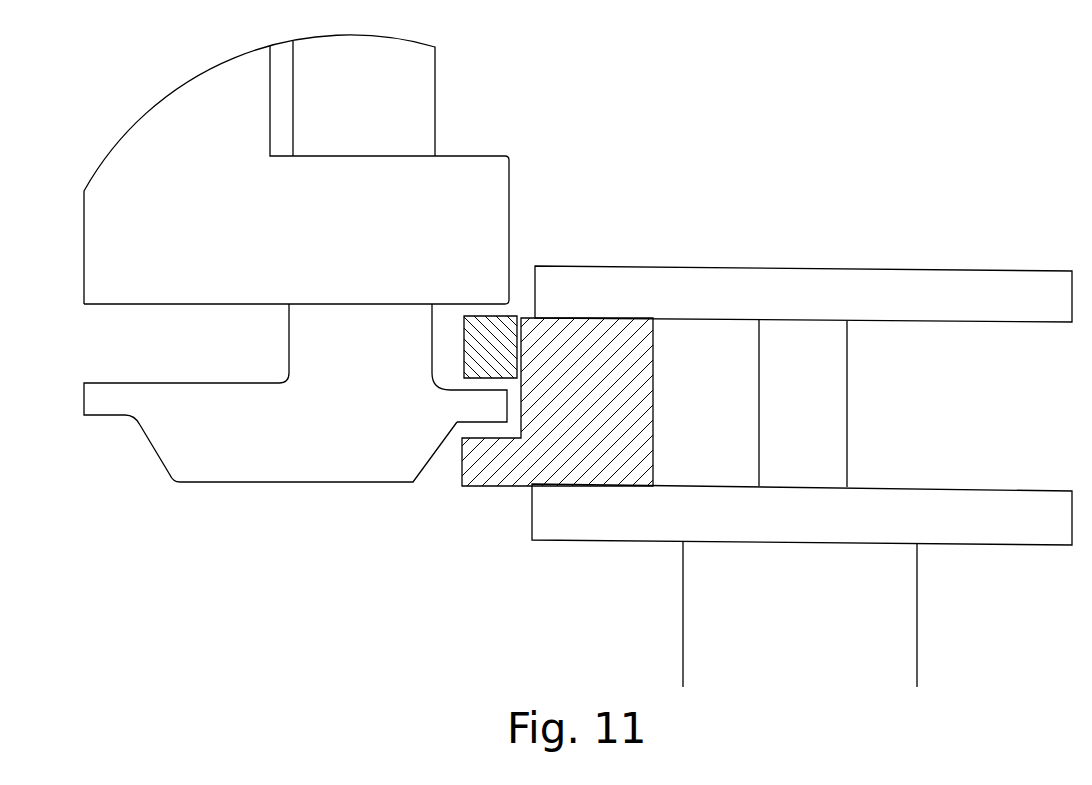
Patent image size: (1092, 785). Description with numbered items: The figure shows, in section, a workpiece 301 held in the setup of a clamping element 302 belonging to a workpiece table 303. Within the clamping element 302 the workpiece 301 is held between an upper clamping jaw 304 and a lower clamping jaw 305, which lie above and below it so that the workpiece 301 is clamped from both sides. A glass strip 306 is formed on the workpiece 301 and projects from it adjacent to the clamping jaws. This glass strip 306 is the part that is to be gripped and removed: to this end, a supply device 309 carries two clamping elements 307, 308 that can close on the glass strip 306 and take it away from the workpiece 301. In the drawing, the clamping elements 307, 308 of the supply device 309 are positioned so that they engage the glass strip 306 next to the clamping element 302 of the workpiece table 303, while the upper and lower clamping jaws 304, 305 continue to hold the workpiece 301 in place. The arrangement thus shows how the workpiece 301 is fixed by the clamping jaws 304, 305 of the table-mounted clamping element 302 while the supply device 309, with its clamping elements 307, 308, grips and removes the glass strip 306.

The workpiece 301 is at (513, 472).
The clamping element 302 is at (777, 231).
The workpiece table 303 is at (957, 654).
The upper clamping jaw 304 is at (591, 276).
The lower clamping jaw 305 is at (587, 527).
The glass strip 306 is at (522, 316).
The clamping element of supply device 307 is at (465, 181).
The clamping element of supply device 308 is at (457, 414).
The supply device 309 is at (267, 489).